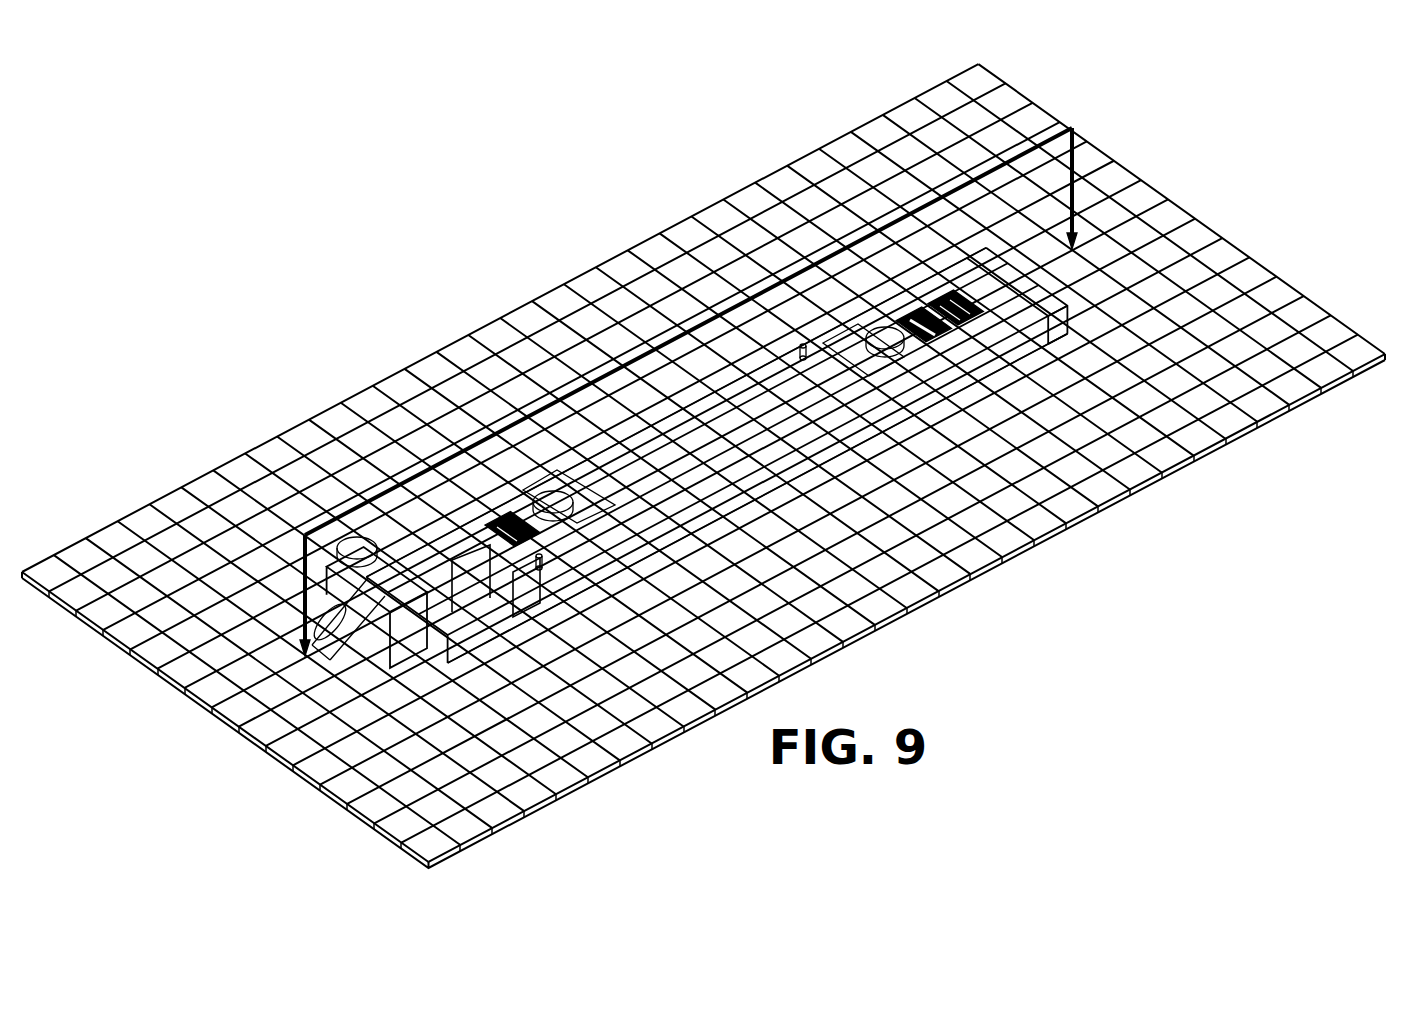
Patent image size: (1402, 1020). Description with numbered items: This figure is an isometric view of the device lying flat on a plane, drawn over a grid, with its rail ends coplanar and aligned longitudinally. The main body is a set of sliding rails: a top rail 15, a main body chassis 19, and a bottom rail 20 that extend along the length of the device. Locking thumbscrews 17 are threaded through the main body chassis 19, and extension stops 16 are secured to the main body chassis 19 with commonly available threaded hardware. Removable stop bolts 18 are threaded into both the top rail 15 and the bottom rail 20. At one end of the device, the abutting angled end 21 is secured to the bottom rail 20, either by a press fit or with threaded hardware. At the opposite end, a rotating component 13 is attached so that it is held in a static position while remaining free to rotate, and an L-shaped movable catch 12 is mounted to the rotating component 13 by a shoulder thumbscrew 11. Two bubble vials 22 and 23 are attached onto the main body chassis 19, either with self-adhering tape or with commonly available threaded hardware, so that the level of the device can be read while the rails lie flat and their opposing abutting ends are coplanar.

The shoulder thumbscrew 11 is at (357, 548).
The L-shaped movable catch 12 is at (413, 634).
The rotating component 13 is at (363, 628).
The top rail 15 is at (437, 543).
The extension stops 16 is at (563, 470).
The locking thumbscrews 17 is at (540, 505).
The removable stop bolts 18 is at (543, 560).
The main body chassis 19 is at (757, 403).
The bottom rail 20 is at (616, 556).
The abutting angled end 21 is at (1002, 268).
The bubble vial 22 is at (918, 323).
The bubble vial 23 is at (955, 300).